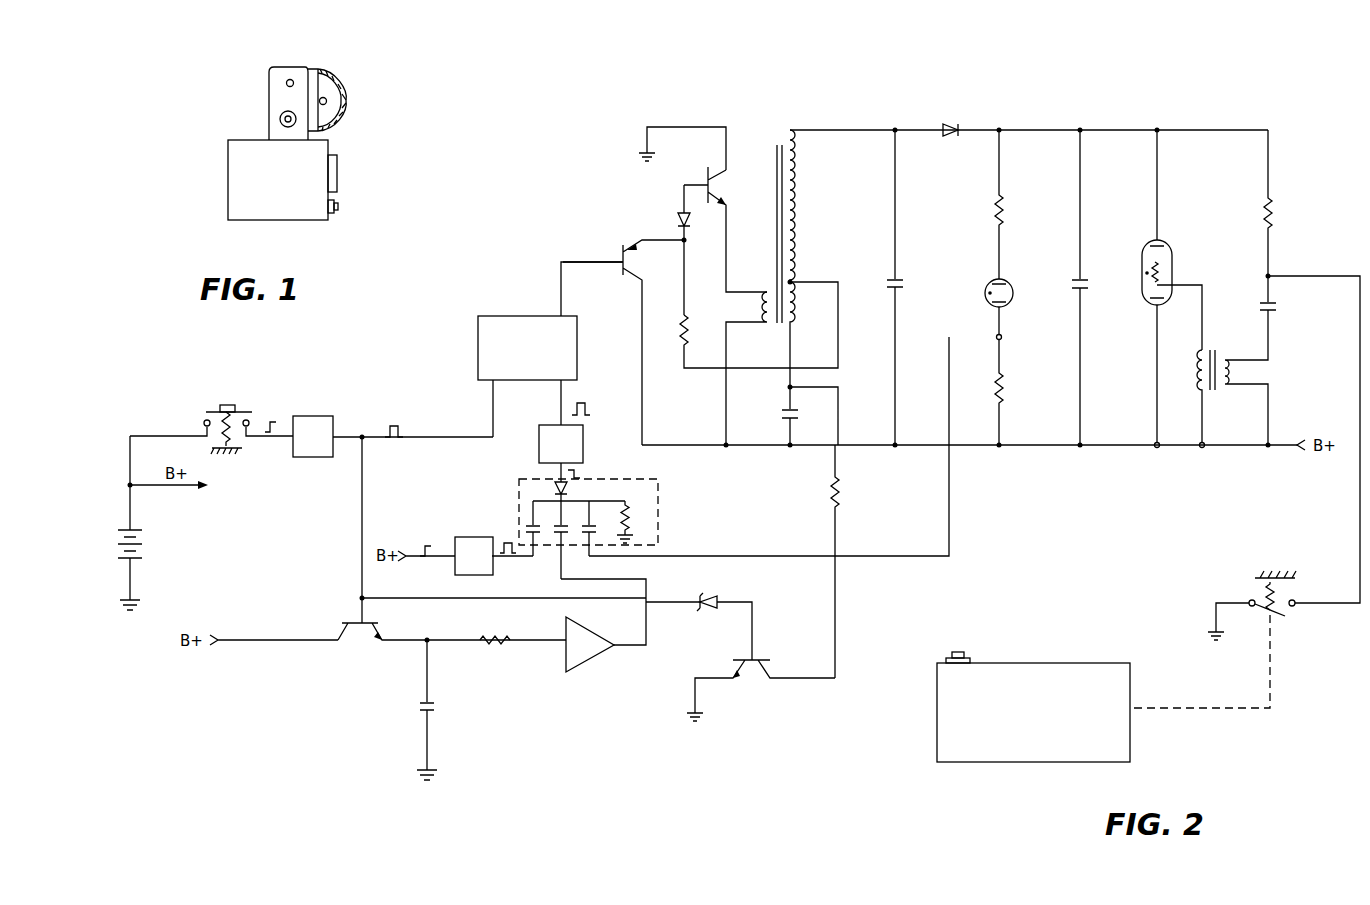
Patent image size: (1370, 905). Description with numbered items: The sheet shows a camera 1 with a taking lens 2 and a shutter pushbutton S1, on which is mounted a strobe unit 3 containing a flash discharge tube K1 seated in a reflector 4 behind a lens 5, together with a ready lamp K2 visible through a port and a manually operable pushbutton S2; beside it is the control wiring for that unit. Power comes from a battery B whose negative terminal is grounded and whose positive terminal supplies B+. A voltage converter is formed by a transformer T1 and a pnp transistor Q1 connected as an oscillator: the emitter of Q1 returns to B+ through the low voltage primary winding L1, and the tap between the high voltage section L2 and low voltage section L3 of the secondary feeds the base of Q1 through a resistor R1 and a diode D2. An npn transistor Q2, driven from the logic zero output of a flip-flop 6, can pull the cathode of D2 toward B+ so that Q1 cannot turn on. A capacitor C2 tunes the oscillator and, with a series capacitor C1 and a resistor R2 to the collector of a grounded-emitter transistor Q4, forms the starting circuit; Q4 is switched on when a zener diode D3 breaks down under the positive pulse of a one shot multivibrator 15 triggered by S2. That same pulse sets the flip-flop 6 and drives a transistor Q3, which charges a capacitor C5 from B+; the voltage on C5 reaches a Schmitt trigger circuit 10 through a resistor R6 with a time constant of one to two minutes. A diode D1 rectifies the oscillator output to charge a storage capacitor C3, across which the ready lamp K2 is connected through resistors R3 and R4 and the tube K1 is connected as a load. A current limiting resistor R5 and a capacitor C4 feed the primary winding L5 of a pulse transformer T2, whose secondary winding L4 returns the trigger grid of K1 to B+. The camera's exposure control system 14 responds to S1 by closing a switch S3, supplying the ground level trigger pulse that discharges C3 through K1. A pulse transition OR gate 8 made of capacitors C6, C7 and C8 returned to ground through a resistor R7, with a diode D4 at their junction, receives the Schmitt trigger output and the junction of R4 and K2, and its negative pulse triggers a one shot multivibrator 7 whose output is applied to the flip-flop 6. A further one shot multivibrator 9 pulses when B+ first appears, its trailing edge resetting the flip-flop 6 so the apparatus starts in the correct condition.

In FIG. 1, the camera 1 is at (312, 220).
In FIG. 1, the lens 2 is at (340, 174).
In FIG. 1, the strobe unit 3 is at (270, 82).
In FIG. 1, the reflector 4 is at (340, 74).
In FIG. 1, the lens 5 is at (346, 122).
In FIG. 2, the flip-flop 6 is at (508, 318).
In FIG. 2, the one shot multivibrator 7 is at (583, 453).
In FIG. 2, the pulse transition OR gate 8 is at (588, 529).
In FIG. 2, the one shot multivibrator 9 is at (470, 537).
In FIG. 2, the Schmitt trigger circuit 10 is at (592, 656).
In FIG. 2, the exposure control system 14 is at (1072, 668).
In FIG. 2, the one shot multivibrator 15 is at (322, 416).
In FIG. 1, the flash discharge tube K1 is at (327, 101).
In FIG. 2, the flash discharge tube K1 is at (1175, 253).
In FIG. 1, the ready lamp K2 is at (292, 79).
In FIG. 2, the ready lamp K2 is at (1015, 286).
In FIG. 1, the shutter pushbutton S1 is at (342, 207).
In FIG. 2, the shutter pushbutton S1 is at (962, 653).
In FIG. 1, the pushbutton S2 is at (279, 118).
In FIG. 2, the pushbutton S2 is at (232, 405).
In FIG. 2, the switch S3 is at (1223, 639).
In FIG. 2, the battery B is at (152, 558).
In FIG. 2, the transistor Q1 is at (725, 229).
In FIG. 2, the transistor Q2 is at (623, 342).
In FIG. 2, the transistor Q3 is at (452, 641).
In FIG. 2, the transistor Q4 is at (761, 690).
In FIG. 2, the diode D1 is at (950, 119).
In FIG. 2, the diode D2 is at (670, 250).
In FIG. 2, the zener diode D3 is at (710, 612).
In FIG. 2, the diode D4 is at (575, 491).
In FIG. 2, the resistor R1 is at (747, 325).
In FIG. 2, the resistor R2 is at (848, 561).
In FIG. 2, the resistor R3 is at (1012, 204).
In FIG. 2, the resistor R4 is at (1012, 392).
In FIG. 2, the current limiting resistor R5 is at (1282, 216).
In FIG. 2, the resistor R6 is at (495, 652).
In FIG. 2, the resistor R7 is at (646, 502).
In FIG. 2, the capacitor C1 is at (799, 416).
In FIG. 2, the capacitor C2 is at (908, 287).
In FIG. 2, the capacitor C3 is at (1092, 287).
In FIG. 2, the capacitor C4 is at (1281, 308).
In FIG. 2, the capacitor C5 is at (440, 710).
In FIG. 2, the capacitor C6 is at (537, 528).
In FIG. 2, the capacitor C7 is at (565, 540).
In FIG. 2, the capacitor C8 is at (593, 528).
In FIG. 2, the low voltage primary winding L1 is at (746, 368).
In FIG. 2, the high voltage section L2 is at (805, 206).
In FIG. 2, the low voltage section L3 is at (805, 334).
In FIG. 2, the secondary winding L4 is at (1188, 399).
In FIG. 2, the primary winding L5 is at (1228, 304).
In FIG. 2, the transformer T1 is at (773, 279).
In FIG. 2, the pulse transformer T2 is at (1220, 366).